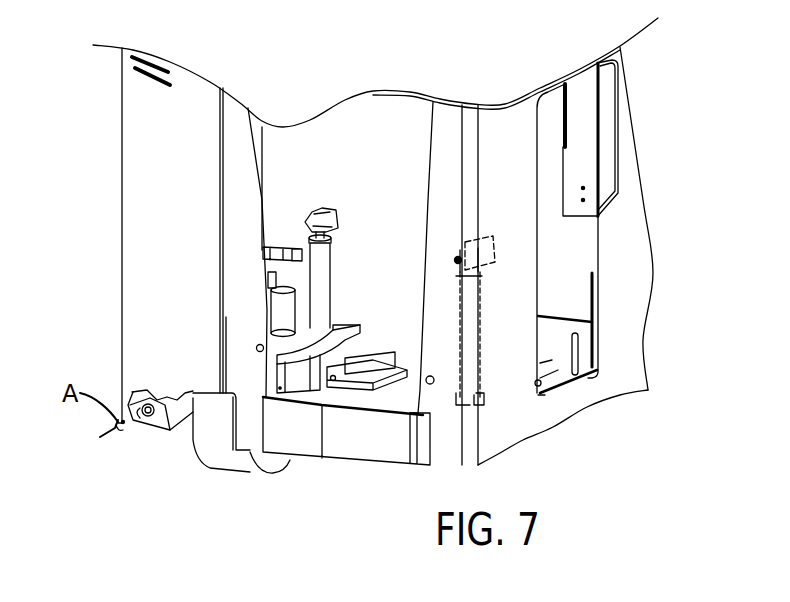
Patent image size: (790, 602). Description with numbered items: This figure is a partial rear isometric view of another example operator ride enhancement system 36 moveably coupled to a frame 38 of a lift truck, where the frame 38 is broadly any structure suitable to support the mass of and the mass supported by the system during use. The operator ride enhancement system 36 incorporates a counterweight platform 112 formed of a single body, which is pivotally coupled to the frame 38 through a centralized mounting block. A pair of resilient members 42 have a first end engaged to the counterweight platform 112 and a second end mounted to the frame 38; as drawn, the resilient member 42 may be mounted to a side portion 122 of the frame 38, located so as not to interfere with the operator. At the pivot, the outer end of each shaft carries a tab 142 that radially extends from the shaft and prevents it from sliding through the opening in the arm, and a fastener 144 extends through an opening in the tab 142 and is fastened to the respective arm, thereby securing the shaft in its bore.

The operator ride enhancement system 36 is at (383, 200).
The frame 38 is at (360, 94).
The resilient member 42 is at (302, 252).
The counterweight platform 112 is at (398, 352).
The side portion 122 is at (414, 228).
The tab 142 is at (154, 400).
The fastener 144 is at (165, 420).